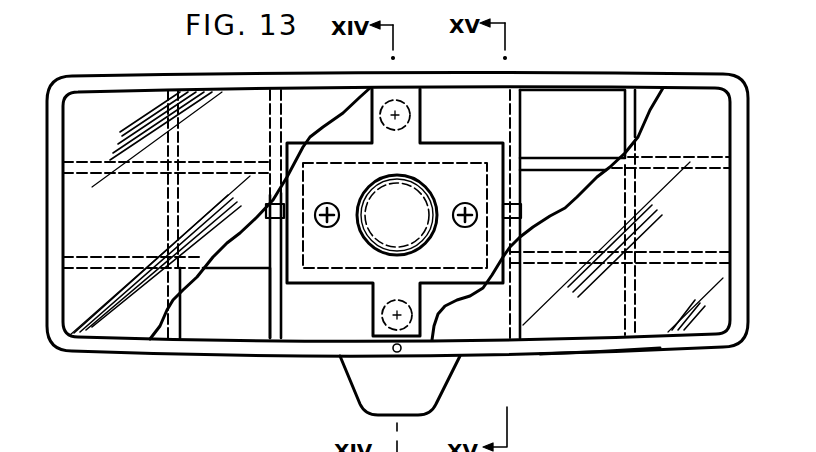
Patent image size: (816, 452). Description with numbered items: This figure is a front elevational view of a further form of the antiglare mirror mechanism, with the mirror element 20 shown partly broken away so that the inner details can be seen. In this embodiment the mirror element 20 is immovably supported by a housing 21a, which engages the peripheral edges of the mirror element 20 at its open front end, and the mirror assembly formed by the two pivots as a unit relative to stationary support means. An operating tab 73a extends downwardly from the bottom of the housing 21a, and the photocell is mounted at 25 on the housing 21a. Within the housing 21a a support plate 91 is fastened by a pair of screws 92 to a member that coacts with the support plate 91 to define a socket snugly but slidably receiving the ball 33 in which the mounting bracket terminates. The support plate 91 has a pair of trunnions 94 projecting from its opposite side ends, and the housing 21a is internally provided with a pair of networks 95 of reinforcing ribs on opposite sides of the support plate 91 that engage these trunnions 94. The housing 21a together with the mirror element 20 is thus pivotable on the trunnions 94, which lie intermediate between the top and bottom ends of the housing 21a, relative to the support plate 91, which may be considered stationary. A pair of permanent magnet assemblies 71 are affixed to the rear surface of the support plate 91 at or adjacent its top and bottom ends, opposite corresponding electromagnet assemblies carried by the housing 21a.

The mirror element 20 is at (150, 108).
The housing 21a is at (580, 346).
The photocell mounting 25 is at (398, 353).
The ball 33 is at (362, 228).
The permanent magnet assemblies 71 is at (410, 115).
The operating tab 73a is at (355, 387).
The support plate 91 is at (337, 281).
The screws 92 is at (327, 203).
The trunnions 94 is at (266, 211).
The networks of reinforcing ribs 95 is at (625, 112).